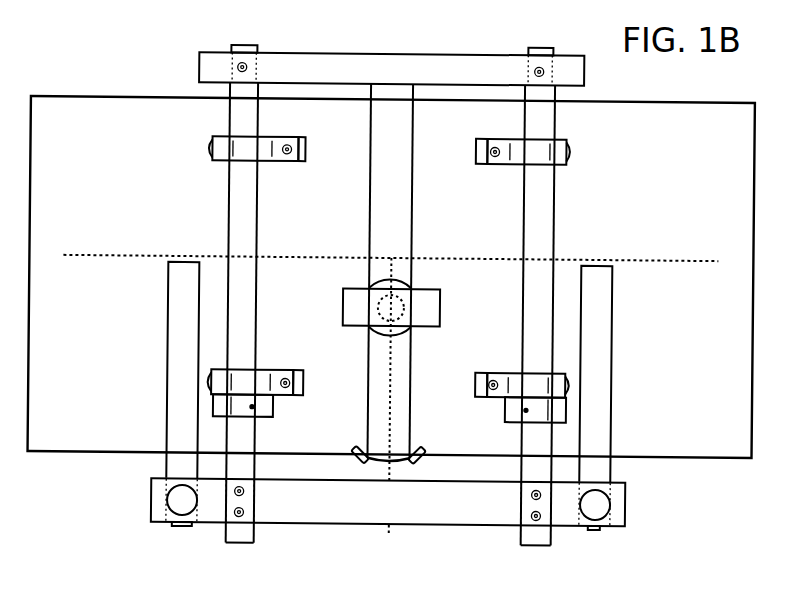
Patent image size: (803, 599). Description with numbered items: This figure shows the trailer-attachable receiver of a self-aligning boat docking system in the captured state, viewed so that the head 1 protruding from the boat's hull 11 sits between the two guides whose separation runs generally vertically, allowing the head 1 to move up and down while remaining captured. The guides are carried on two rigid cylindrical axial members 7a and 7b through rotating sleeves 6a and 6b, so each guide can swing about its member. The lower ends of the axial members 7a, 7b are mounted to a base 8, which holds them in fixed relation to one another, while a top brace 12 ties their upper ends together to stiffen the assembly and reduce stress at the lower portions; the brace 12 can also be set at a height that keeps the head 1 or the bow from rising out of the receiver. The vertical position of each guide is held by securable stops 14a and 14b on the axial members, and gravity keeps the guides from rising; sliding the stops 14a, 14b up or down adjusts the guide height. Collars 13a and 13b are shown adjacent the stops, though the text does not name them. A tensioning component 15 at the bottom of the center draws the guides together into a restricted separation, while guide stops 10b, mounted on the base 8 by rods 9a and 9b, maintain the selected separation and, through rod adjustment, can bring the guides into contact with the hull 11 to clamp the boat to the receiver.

The protruding head 1 is at (435, 305).
The rotating sleeve 6a is at (278, 163).
The rotating sleeve 6b is at (505, 165).
The axial member 7a is at (240, 193).
The axial member 7b is at (543, 203).
The base 8 is at (151, 503).
The rod 9a is at (173, 507).
The rod 9b is at (603, 505).
The guide stop 10b is at (173, 462).
The hull 11 is at (378, 256).
The top brace 12 is at (432, 62).
The lower clamp 13a is at (265, 369).
The lower clamp 13b is at (512, 372).
The securable stop 14a is at (270, 410).
The securable stop 14b is at (505, 415).
The tensioning component 15 is at (380, 462).